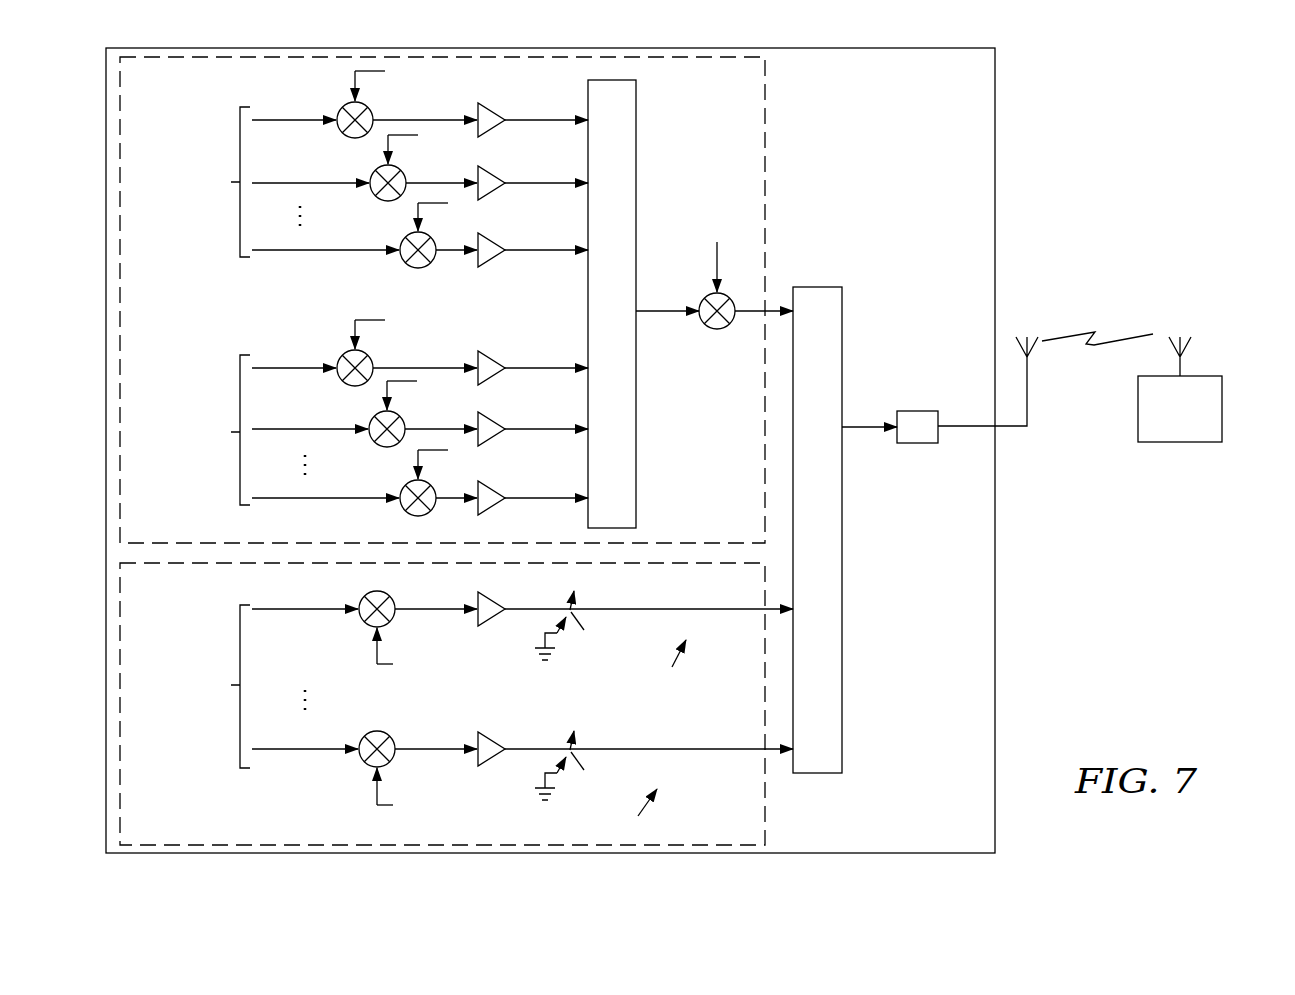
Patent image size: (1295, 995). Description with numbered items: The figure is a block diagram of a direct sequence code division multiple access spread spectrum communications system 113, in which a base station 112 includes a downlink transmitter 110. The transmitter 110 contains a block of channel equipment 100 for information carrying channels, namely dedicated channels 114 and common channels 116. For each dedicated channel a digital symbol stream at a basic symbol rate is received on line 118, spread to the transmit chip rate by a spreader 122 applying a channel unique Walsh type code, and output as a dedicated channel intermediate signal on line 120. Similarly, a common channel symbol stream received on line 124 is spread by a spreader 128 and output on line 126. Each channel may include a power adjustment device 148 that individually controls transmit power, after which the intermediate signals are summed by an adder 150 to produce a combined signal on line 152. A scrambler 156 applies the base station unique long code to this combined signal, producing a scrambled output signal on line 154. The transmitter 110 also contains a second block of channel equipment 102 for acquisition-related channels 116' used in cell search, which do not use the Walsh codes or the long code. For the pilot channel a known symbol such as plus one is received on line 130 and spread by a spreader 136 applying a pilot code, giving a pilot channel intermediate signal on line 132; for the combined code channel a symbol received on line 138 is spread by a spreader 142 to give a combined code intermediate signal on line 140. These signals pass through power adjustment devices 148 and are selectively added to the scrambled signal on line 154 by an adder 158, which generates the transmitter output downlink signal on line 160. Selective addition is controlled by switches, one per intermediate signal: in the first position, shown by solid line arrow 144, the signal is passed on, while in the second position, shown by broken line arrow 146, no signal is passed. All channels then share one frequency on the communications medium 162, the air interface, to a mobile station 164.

The block of channel equipment 100 is at (764, 107).
The block of channel equipment 102 is at (764, 800).
The downlink transmitter 110 is at (875, 579).
The base station 112 is at (995, 578).
The DS-CDMA spread spectrum communications system 113 is at (1158, 561).
The dedicated channels 114 is at (238, 221).
The common channels 116 is at (192, 430).
The acquisition-related channels 116' is at (213, 686).
The line 118 is at (291, 118).
The line 120 is at (561, 117).
The spreader 122 is at (379, 200).
The line 124 is at (291, 366).
The line 126 is at (560, 366).
The spreader 128 is at (379, 446).
The line 130 is at (296, 612).
The line 132 is at (723, 607).
The spreader 136 is at (362, 597).
The line 138 is at (303, 752).
The line 140 is at (720, 747).
The spreader 142 is at (364, 736).
The solid line arrow 144 is at (569, 608).
The broken line arrow 146 is at (578, 614).
The power adjustment device 148 is at (494, 129).
The adder 150 is at (636, 496).
The line 152 is at (672, 309).
The line 154 is at (757, 308).
The scrambler 156 is at (711, 328).
The adder 158 is at (842, 740).
The line 160 is at (877, 425).
The communications medium 162 is at (1084, 330).
The mobile station 164 is at (1168, 442).